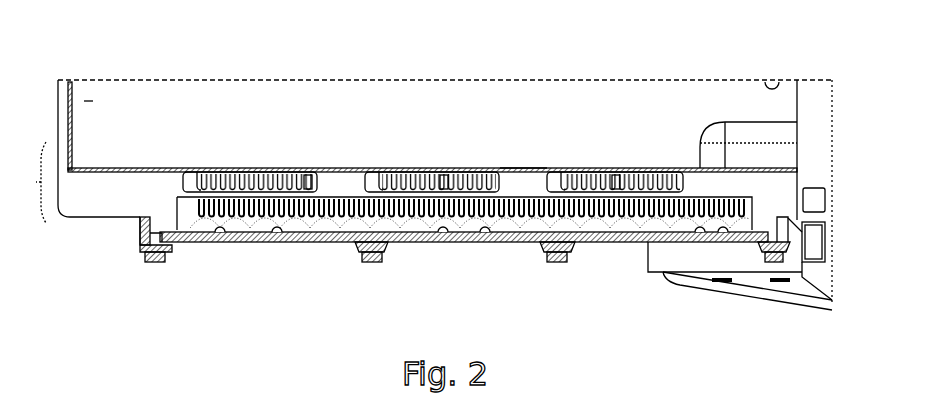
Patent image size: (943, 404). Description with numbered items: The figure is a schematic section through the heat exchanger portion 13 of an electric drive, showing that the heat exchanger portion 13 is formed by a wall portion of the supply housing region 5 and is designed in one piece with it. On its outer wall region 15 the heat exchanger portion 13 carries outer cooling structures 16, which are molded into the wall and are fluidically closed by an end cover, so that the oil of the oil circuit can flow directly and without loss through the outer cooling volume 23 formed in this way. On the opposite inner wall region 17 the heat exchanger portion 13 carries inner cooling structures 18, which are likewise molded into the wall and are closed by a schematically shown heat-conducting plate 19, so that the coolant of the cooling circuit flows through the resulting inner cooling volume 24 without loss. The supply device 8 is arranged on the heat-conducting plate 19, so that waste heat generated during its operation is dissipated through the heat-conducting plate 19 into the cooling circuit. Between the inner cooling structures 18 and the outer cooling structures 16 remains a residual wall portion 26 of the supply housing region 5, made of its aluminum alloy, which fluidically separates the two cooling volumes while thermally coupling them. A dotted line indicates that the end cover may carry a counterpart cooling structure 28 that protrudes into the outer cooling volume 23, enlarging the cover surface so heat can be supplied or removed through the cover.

The supply housing region 5 is at (205, 78).
The supply device 8 is at (88, 95).
The heat exchanger portion 13 is at (205, 292).
The outer wall region 15 is at (462, 238).
The outer cooling structures 16 is at (348, 243).
The inner wall region 17 is at (540, 168).
The inner cooling structures 18 is at (268, 170).
The heat-conducting plate 19 is at (208, 160).
The outer cooling volume 23 is at (400, 242).
The inner cooling volume 24 is at (312, 172).
The wall portion 26 is at (188, 197).
The counterpart cooling structure 28 is at (280, 243).